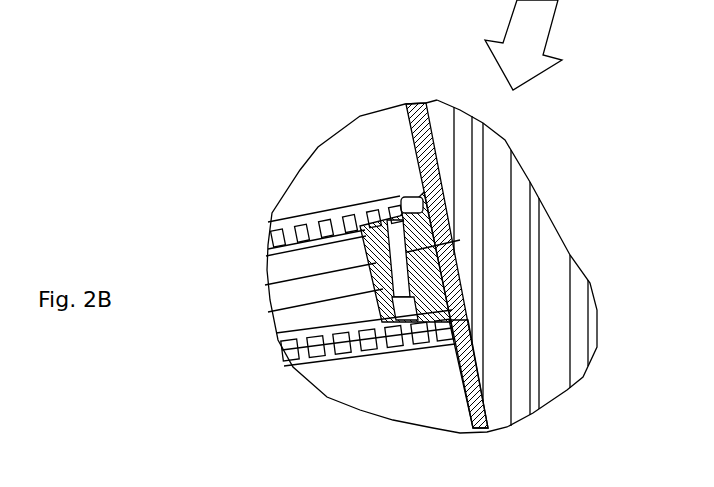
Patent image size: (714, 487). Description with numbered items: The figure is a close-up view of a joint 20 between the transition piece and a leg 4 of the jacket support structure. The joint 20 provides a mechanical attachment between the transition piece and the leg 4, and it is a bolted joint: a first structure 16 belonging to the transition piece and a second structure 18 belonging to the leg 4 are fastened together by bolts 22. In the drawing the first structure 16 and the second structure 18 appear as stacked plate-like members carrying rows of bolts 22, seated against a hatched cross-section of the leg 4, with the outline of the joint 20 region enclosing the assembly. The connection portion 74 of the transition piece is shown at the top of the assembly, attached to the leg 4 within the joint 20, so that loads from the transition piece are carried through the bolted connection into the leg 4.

The connection portion 74 is at (406, 104).
The leg 4 is at (487, 414).
The joint 20 is at (573, 177).
The first structure 16 is at (272, 240).
The second structure 18 is at (290, 350).
The bolts 22 is at (341, 355).